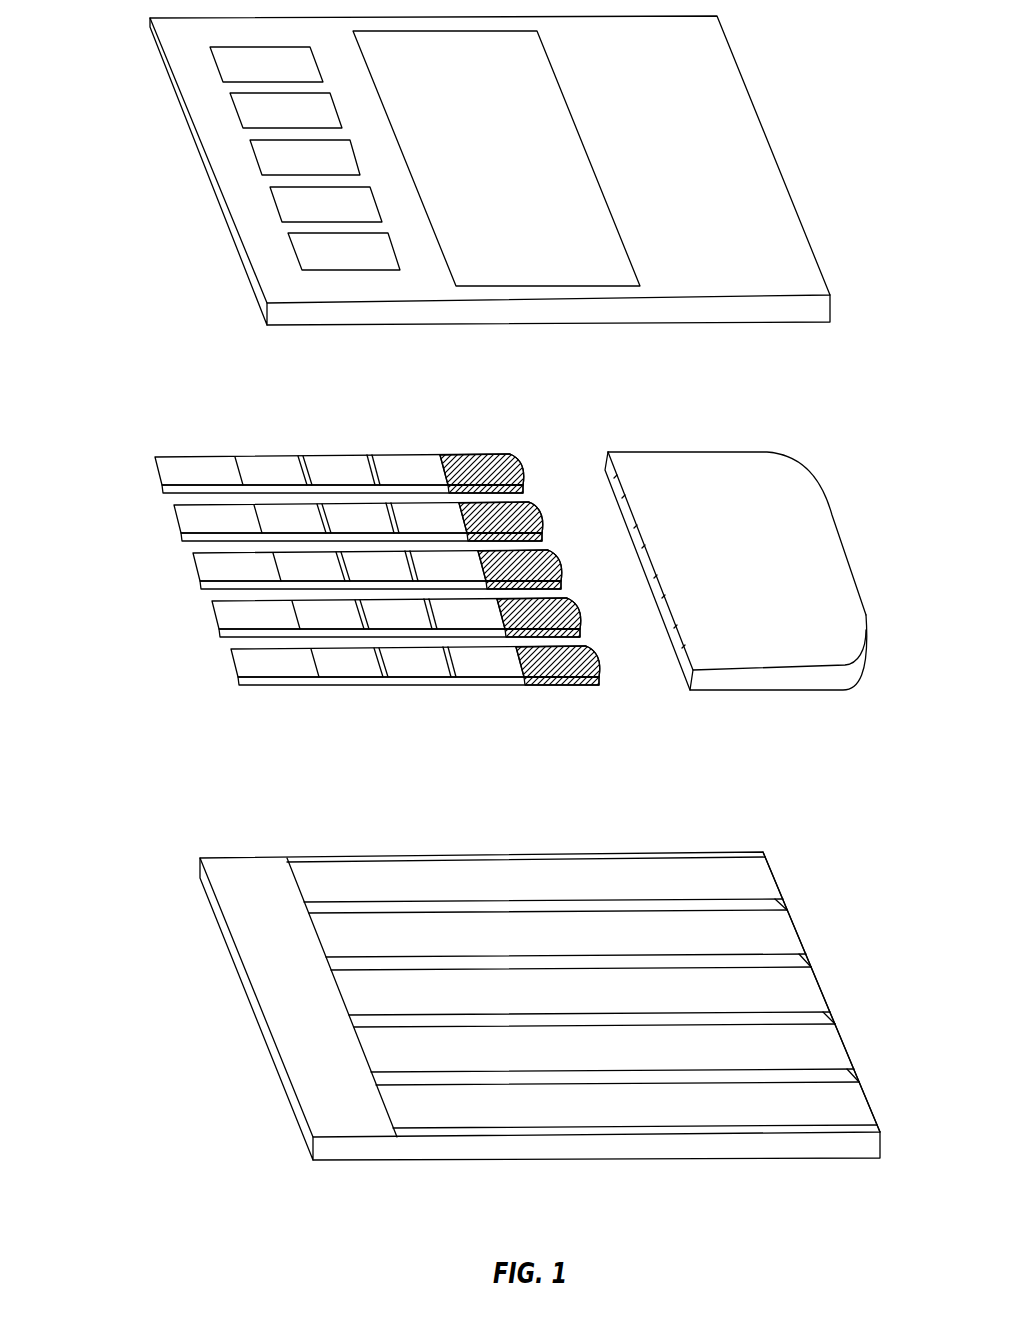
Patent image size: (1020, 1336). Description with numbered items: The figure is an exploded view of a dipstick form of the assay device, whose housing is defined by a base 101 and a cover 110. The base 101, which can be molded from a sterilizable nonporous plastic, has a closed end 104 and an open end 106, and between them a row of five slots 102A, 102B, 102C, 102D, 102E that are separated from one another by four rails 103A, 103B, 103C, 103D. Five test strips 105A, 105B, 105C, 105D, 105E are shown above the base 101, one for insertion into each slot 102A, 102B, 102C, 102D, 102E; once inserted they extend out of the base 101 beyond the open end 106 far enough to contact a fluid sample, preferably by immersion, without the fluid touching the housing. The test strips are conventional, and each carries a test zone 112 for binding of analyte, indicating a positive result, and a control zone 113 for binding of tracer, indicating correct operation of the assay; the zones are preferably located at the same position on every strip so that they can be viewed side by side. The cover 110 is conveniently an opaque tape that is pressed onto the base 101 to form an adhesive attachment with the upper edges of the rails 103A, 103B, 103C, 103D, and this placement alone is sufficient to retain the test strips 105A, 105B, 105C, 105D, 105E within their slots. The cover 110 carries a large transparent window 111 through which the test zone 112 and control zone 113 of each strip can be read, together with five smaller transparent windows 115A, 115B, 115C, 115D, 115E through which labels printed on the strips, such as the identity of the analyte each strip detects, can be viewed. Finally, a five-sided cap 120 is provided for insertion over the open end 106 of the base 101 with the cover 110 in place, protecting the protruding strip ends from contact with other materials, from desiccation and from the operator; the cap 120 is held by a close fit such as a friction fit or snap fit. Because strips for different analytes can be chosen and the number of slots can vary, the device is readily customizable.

The base 101 is at (205, 1005).
The slot 102A is at (572, 896).
The slot 102B is at (595, 951).
The slot 102C is at (620, 1007).
The slot 102D is at (643, 1064).
The slot 102E is at (663, 1121).
The rail 103A is at (365, 912).
The rail 103B is at (380, 967).
The rail 103C is at (398, 1022).
The rail 103D is at (420, 1078).
The closed end 104 is at (320, 1009).
The test strip 105A is at (289, 452).
The test strip 105B is at (178, 527).
The test strip 105C is at (198, 575).
The test strip 105D is at (217, 622).
The test strip 105E is at (237, 668).
The open end 106 is at (772, 877).
The cover 110 is at (240, 173).
The transparent window 111 is at (512, 157).
The test zone 112 is at (300, 455).
The control zone 113 is at (367, 455).
The transparent window 115A is at (223, 65).
The transparent window 115B is at (243, 112).
The transparent window 115C is at (262, 158).
The transparent window 115D is at (280, 205).
The transparent window 115E is at (300, 253).
The cap 120 is at (763, 556).